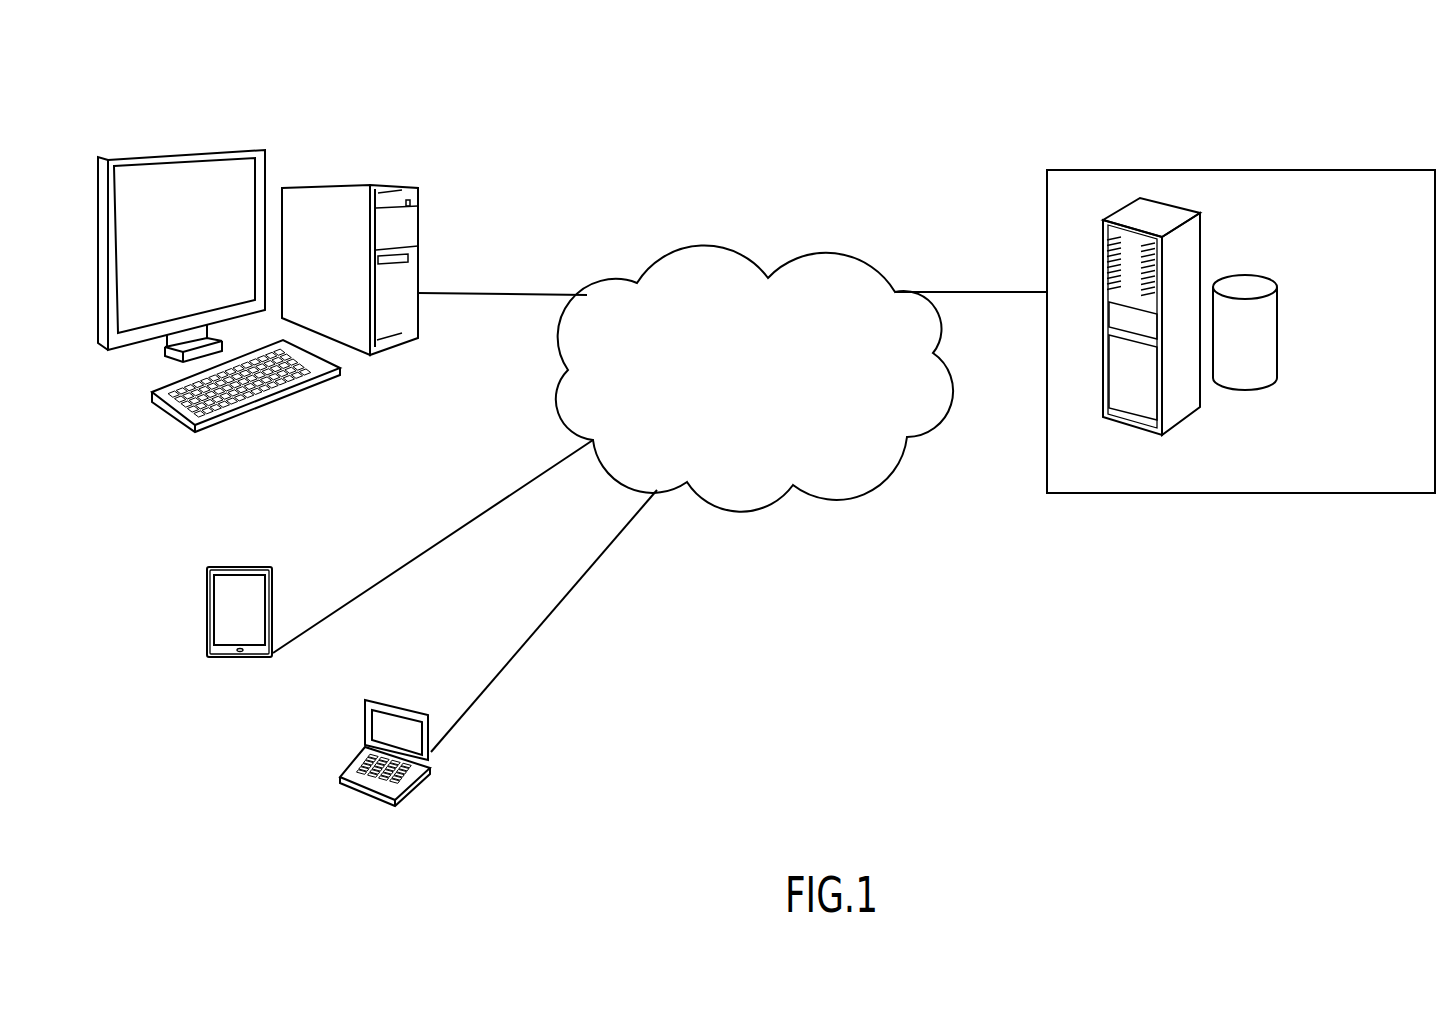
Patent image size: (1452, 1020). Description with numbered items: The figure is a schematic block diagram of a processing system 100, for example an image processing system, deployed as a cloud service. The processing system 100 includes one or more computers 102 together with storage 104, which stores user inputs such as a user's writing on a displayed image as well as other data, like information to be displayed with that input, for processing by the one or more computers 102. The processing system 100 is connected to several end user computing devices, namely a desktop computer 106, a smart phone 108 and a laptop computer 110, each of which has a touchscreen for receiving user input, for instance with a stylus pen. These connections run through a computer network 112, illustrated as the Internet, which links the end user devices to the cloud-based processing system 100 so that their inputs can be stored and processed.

The processing system 100 is at (1219, 94).
The computers 102 is at (1178, 215).
The storage 104 is at (1240, 281).
The desktop computer 106 is at (182, 94).
The smart phone 108 is at (250, 567).
The laptop computer 110 is at (405, 708).
The computer network 112 is at (779, 149).